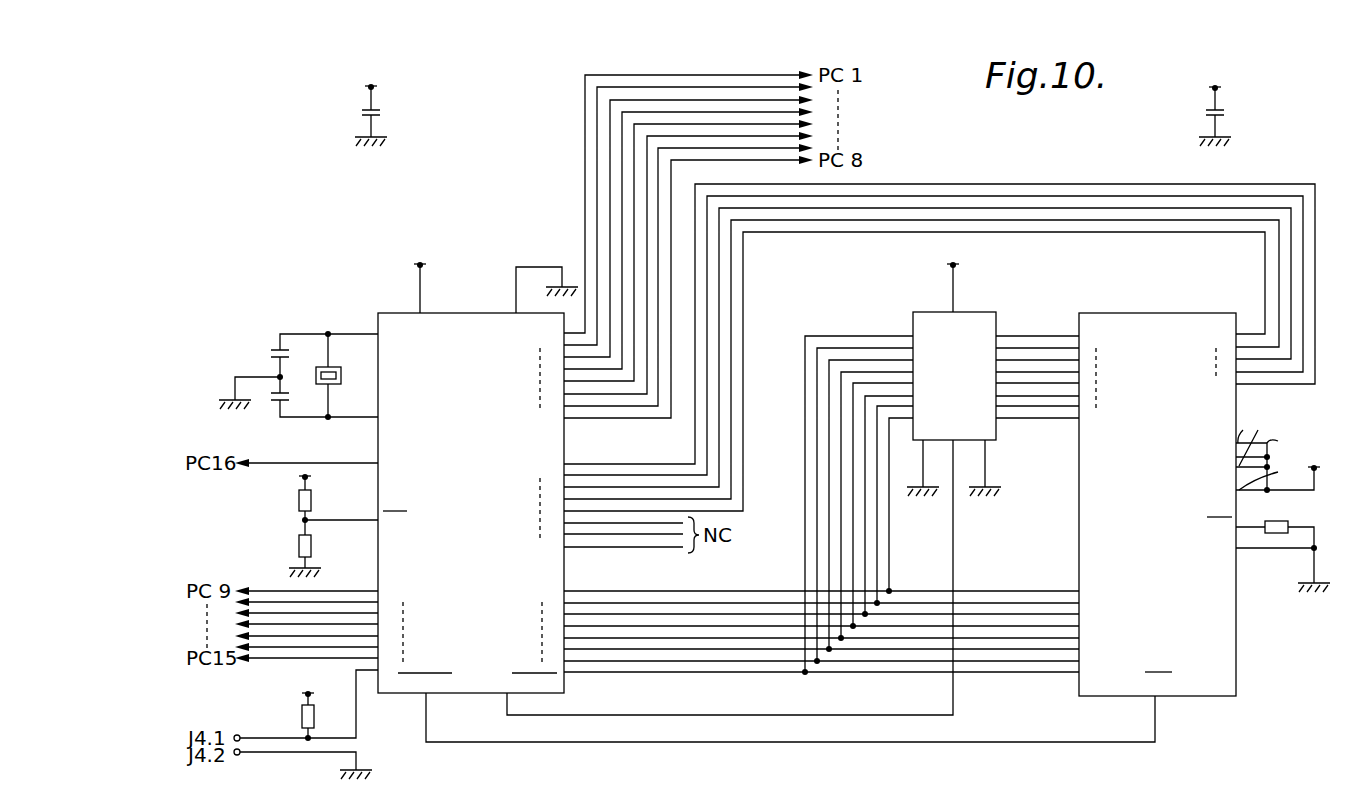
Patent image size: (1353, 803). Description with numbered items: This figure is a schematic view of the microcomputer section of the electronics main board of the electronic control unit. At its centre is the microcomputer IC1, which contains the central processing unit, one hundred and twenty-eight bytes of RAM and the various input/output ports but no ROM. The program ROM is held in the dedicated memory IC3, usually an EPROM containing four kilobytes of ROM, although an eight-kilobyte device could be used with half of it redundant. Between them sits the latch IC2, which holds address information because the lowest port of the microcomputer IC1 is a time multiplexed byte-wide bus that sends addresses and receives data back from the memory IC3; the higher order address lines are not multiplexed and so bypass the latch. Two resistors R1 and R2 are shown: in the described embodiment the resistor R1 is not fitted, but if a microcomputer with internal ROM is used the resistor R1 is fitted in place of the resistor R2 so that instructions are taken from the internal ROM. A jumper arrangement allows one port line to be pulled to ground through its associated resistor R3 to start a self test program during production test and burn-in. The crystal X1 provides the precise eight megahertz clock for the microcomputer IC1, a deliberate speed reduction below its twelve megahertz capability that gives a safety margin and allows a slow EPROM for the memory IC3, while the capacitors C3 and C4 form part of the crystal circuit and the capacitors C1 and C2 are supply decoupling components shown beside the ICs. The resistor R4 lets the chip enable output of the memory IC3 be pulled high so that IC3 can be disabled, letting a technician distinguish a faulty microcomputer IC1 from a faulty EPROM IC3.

The microcomputer IC1 is at (484, 502).
The latch IC2 is at (975, 389).
The dedicated memory IC3 is at (1177, 515).
The resistor R1 is at (324, 500).
The resistor R2 is at (295, 555).
The resistor R3 is at (313, 711).
The resistor R4 is at (1275, 524).
The capacitor C1 is at (388, 114).
The capacitor C2 is at (1232, 114).
The capacitor C3 is at (269, 355).
The capacitor C4 is at (254, 393).
The crystal X1 is at (329, 375).